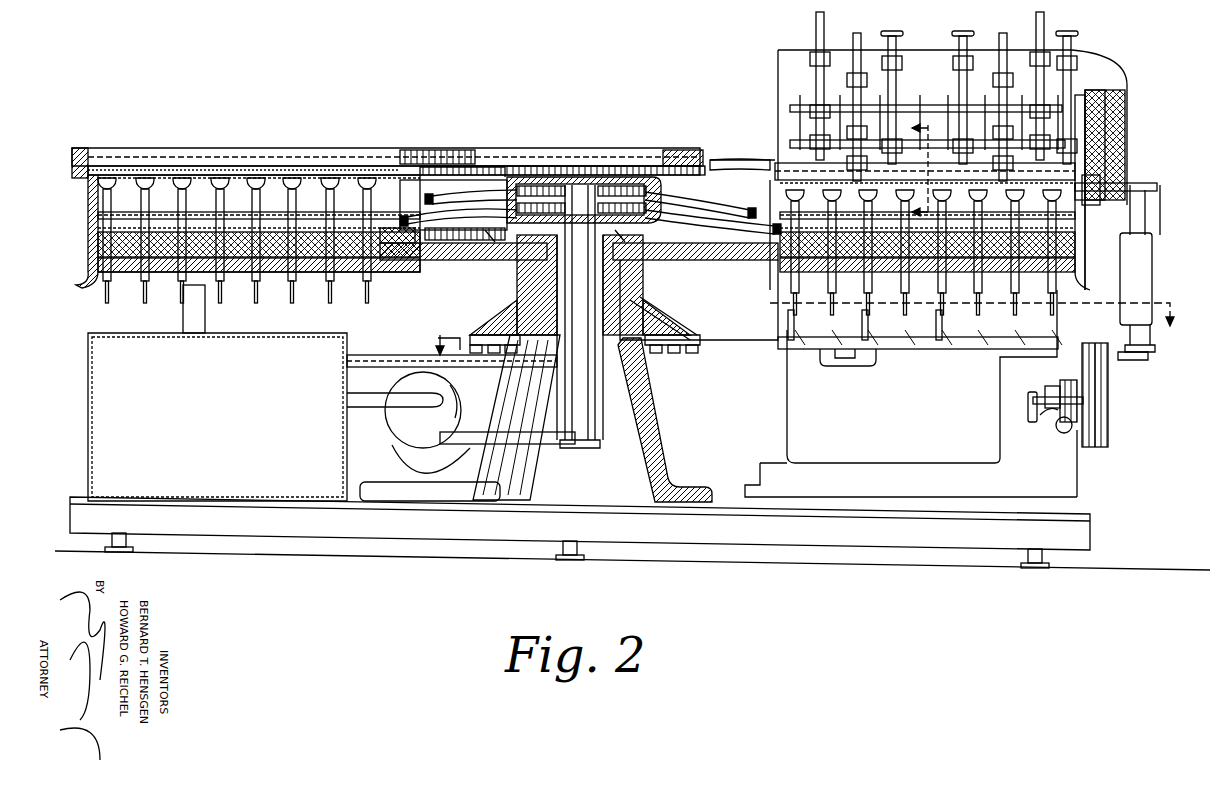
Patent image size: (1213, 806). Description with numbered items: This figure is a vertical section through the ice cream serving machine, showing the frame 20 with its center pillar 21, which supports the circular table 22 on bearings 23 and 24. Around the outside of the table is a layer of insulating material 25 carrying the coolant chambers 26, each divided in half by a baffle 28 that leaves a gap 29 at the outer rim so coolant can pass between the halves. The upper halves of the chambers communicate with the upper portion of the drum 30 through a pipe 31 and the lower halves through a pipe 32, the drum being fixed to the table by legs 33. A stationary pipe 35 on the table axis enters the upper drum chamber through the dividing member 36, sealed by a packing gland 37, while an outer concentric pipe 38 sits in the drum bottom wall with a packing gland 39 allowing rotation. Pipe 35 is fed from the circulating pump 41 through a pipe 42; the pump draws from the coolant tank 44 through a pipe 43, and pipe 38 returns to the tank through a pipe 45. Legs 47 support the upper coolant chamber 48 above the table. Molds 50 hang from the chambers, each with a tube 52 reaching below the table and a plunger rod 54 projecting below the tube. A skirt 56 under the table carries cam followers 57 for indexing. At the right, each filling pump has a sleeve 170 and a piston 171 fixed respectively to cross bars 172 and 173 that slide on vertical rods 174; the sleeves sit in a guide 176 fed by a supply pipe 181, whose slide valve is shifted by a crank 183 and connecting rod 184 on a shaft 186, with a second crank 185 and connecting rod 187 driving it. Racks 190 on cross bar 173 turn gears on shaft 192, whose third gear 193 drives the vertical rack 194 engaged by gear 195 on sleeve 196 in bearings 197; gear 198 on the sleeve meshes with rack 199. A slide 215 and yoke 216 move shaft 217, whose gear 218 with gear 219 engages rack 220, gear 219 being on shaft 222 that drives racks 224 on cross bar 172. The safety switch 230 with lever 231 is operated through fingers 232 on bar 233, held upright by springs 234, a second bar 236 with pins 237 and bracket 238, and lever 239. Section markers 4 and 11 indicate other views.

The frame 20 is at (324, 522).
The center pillar 21 is at (665, 445).
The circular table 22 is at (80, 272).
The bearing 23 is at (645, 300).
The bearing 24 is at (520, 262).
The insulating material 25 is at (88, 240).
The coolant chambers 26 is at (415, 180).
The baffle 28 is at (316, 210).
The gap 29 is at (86, 203).
The drum 30 is at (650, 190).
The pipe 31 is at (520, 186).
The pipe 32 is at (480, 190).
The legs 33 is at (690, 168).
The pipe 35 is at (578, 438).
The dividing member 36 is at (555, 185).
The packing gland 37 is at (630, 190).
The outer concentric pipe 38 is at (594, 365).
The packing gland 39 is at (510, 262).
The circulating pump 41 is at (396, 438).
The pipe 42 is at (445, 450).
The pipe 43 is at (395, 390).
The coolant tank 44 is at (278, 479).
The pipe 45 is at (382, 356).
The legs 47 is at (183, 320).
The upper coolant chamber 48 is at (212, 152).
The molds 50 is at (150, 178).
The tube 52 is at (178, 272).
The rod 54 is at (256, 290).
The skirt 56 is at (692, 335).
The cam followers 57 is at (698, 350).
The section line 4 is at (805, 320).
The section line 11 is at (929, 167).
The sleeve 170 is at (800, 137).
The piston 171 is at (800, 113).
The cross bar 172 is at (790, 148).
The cross bar 173 is at (790, 105).
The vertical rods 174 is at (960, 82).
The guide 176 is at (1115, 165).
The supply pipe 181 is at (735, 165).
The crank 183 is at (1157, 186).
The connecting rod 184 is at (1088, 200).
The second crank 185 is at (1140, 358).
The shaft 186 is at (1152, 262).
The connecting rod 187 is at (1125, 360).
The racks 190 is at (815, 17).
The shaft 192 is at (1125, 150).
The third gear 193 is at (1112, 127).
The vertical rack 194 is at (1088, 450).
The gear 195 is at (1076, 440).
The sleeve 196 is at (1072, 372).
The bearings 197 is at (1050, 388).
The gear 198 is at (1052, 415).
The rack 199 is at (1060, 433).
The slide 215 is at (1028, 420).
The yoke 216 is at (1028, 405).
The shaft 217 is at (1040, 398).
The gear 218 is at (1108, 405).
The gear 219 is at (1112, 98).
The rack 220 is at (1108, 440).
The shaft 222 is at (1085, 100).
The racks 224 is at (858, 36).
The switch 230 is at (968, 349).
The switch actuating lever 231 is at (948, 348).
The fingers 232 is at (775, 310).
The bar 233 is at (812, 350).
The springs 234 is at (795, 345).
The second bar 236 is at (775, 328).
The pins 237 is at (839, 325).
The bracket 238 is at (950, 325).
The lever 239 is at (845, 366).